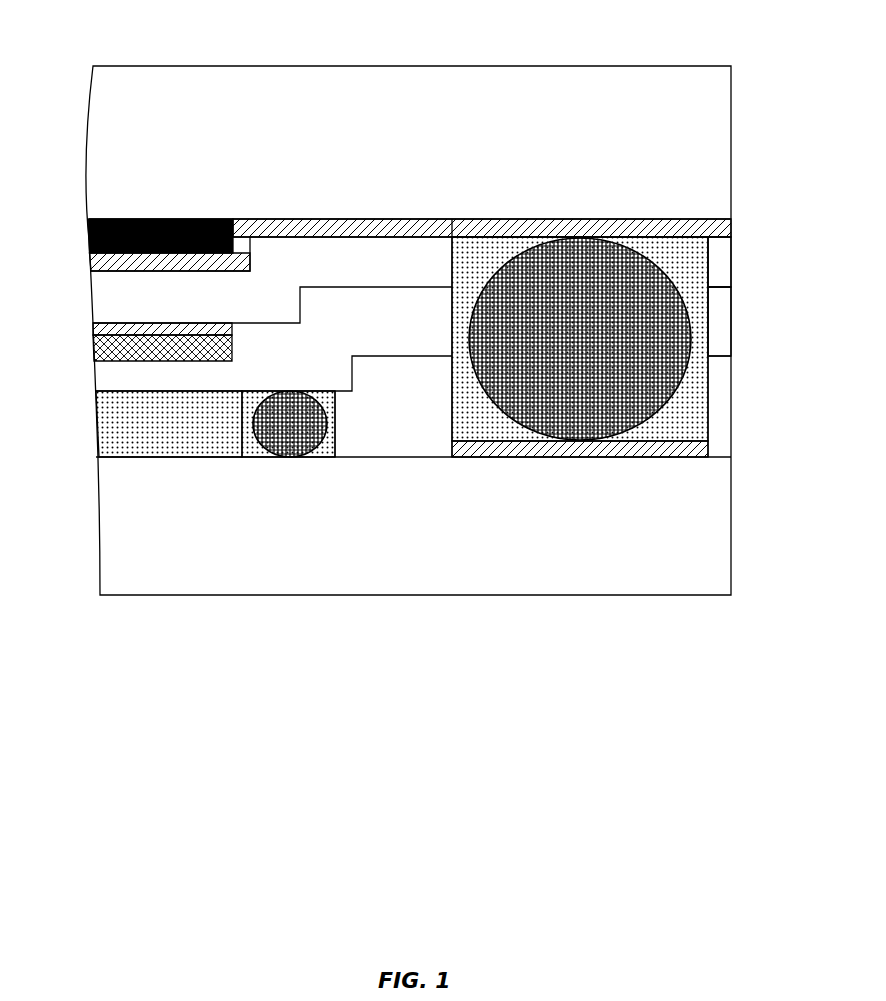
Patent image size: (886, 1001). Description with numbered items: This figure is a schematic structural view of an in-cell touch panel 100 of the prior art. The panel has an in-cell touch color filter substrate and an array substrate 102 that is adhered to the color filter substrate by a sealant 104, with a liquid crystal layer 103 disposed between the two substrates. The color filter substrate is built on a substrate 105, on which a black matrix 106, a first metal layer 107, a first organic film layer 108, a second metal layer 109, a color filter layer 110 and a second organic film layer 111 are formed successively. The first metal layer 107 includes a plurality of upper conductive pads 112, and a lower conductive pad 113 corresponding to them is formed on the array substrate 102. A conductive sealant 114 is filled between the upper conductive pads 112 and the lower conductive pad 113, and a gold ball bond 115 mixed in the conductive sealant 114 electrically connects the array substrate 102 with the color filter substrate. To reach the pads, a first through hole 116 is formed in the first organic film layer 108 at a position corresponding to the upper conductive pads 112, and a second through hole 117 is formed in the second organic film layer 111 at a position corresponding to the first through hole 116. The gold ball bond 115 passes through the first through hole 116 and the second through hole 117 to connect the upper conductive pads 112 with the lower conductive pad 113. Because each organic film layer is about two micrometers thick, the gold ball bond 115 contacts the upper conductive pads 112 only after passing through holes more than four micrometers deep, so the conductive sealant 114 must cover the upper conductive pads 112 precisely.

The in-cell touch panel 100 is at (124, 28).
The array substrate 102 is at (699, 552).
The liquid crystal layer 103 is at (118, 407).
The sealant 104 is at (244, 446).
The substrate 105 is at (703, 132).
The black matrix 106 is at (88, 229).
The first metal layer 107 is at (100, 258).
The first organic film layer 108 is at (718, 282).
The second metal layer 109 is at (98, 326).
The color filter layer 110 is at (98, 350).
The second organic film layer 111 is at (712, 346).
The upper conductive pads 112 is at (728, 226).
The lower conductive pad 113 is at (683, 451).
The conductive sealant 114 is at (682, 417).
The gold ball bond 115 is at (660, 381).
The first through hole 116 is at (708, 260).
The second through hole 117 is at (708, 318).